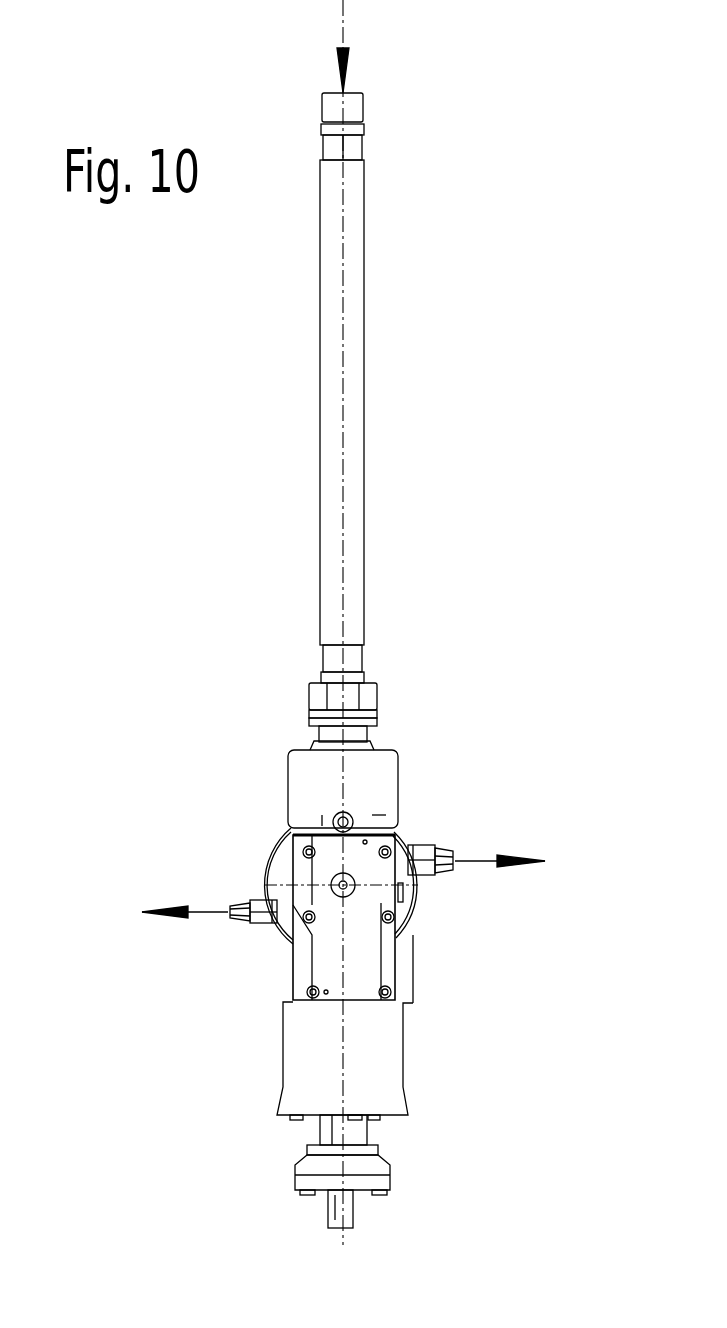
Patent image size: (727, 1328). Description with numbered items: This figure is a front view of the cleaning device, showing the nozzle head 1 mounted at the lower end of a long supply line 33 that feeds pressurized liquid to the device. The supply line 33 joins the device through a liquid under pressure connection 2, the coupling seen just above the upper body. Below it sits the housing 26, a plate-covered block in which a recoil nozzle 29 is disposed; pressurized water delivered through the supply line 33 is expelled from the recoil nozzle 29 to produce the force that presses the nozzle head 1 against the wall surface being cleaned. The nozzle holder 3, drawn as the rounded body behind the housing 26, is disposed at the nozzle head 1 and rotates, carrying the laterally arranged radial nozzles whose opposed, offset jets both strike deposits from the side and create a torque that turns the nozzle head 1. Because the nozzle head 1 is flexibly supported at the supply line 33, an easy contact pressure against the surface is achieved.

The nozzle head 1 is at (287, 952).
The liquid under pressure connection 2 is at (367, 697).
The nozzle holder 3 is at (285, 928).
The housing 26 is at (387, 942).
The recoil nozzle 29 is at (342, 887).
The supply line 33 is at (352, 378).